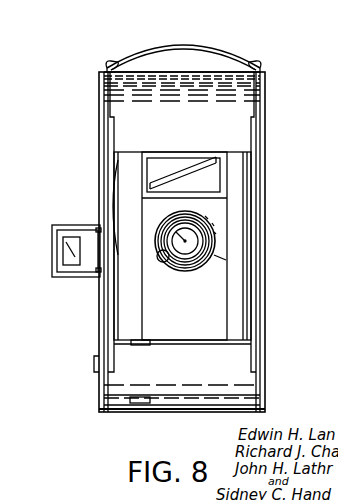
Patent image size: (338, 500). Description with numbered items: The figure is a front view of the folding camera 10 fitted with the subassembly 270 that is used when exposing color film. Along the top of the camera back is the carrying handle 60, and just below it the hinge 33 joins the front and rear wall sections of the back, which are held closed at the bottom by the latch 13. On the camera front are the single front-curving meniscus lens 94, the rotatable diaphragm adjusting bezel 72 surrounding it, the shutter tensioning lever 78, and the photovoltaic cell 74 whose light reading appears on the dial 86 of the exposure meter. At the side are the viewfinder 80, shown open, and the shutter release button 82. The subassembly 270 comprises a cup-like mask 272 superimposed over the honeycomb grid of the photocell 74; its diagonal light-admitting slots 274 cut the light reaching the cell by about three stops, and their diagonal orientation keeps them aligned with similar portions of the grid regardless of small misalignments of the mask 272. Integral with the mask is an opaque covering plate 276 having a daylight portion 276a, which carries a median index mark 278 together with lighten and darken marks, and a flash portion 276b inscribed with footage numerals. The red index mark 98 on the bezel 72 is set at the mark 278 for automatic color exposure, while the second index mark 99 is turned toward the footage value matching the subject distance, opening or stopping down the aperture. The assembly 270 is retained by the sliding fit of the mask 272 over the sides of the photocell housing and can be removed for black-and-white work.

The camera 10 is at (269, 146).
The latch 13 is at (148, 406).
The hinge 33 is at (162, 74).
The handle 60 is at (256, 52).
The diaphragm adjusting bezel element 72 is at (206, 268).
The photovoltaic cell 74 is at (137, 167).
The shutter tensioning lever 78 is at (140, 346).
The viewfinder 80 is at (52, 256).
The shutter release button 82 is at (94, 364).
The dial 86 is at (111, 203).
The meniscus lens 94 is at (175, 231).
The index mark 98 is at (169, 268).
The second index mark 99 is at (200, 214).
The subassembly 270 is at (233, 190).
The cup-like mask 272 is at (168, 165).
The light-admitting slots 274 is at (187, 165).
The covering plate element 276 is at (229, 237).
The daylight portion of covering plate 276a is at (155, 259).
The flash portion of covering plate 276b is at (226, 251).
The median index mark 278 is at (99, 273).